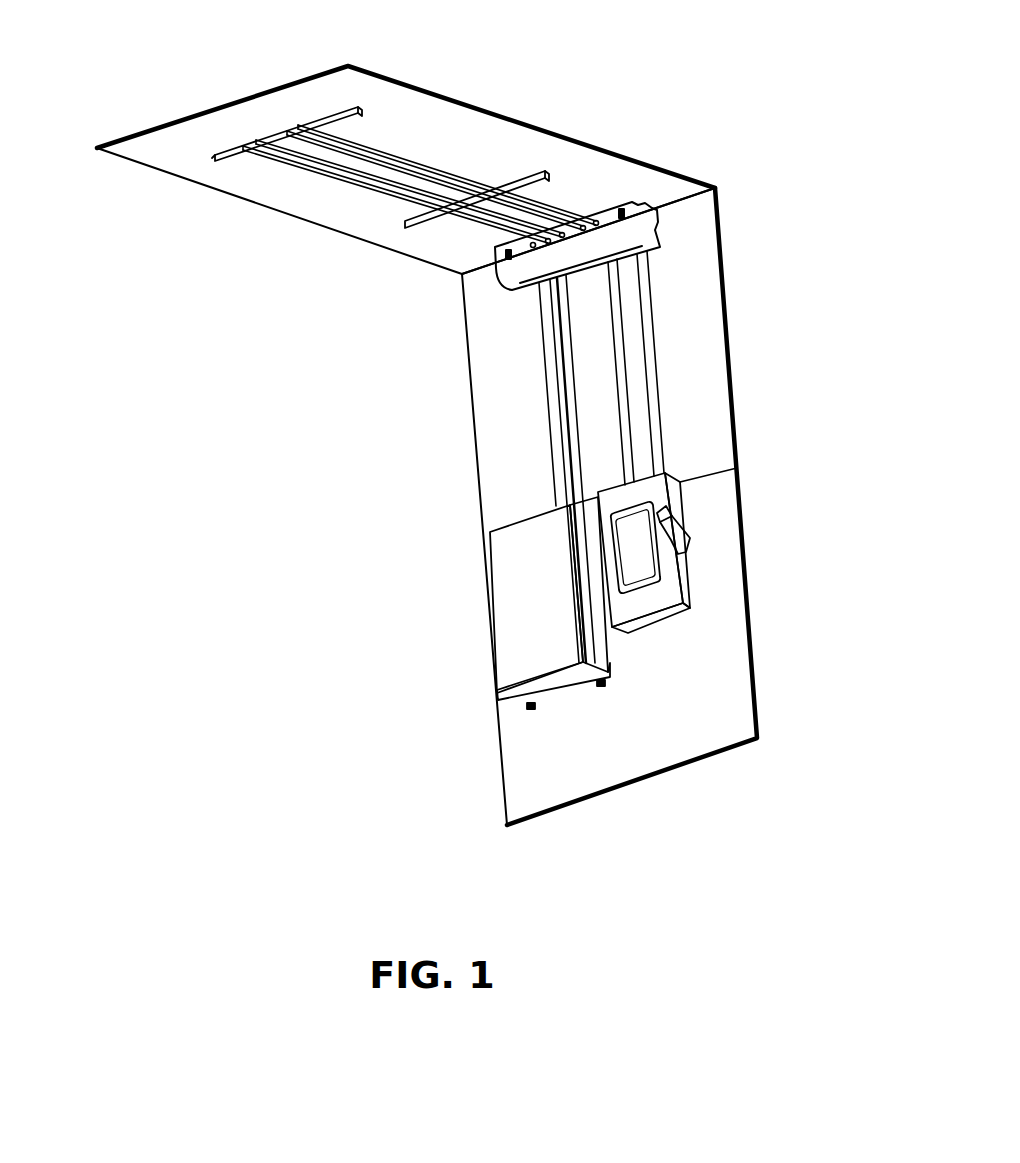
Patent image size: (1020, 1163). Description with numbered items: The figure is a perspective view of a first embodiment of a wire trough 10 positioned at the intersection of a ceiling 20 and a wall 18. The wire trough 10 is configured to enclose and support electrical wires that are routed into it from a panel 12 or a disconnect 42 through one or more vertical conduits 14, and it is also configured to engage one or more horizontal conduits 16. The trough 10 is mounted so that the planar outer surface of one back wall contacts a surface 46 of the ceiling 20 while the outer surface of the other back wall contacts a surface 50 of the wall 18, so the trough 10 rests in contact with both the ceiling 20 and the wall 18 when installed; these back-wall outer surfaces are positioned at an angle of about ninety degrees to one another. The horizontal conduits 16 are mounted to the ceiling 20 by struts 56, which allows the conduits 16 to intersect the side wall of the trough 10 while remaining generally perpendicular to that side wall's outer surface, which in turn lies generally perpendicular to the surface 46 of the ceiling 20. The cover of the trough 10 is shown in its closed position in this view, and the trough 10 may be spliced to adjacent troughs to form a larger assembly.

The wire trough 10 is at (684, 222).
The panel 12 is at (498, 632).
The vertical conduits 14 is at (632, 403).
The horizontal conduits 16 is at (402, 157).
The wall 18 is at (748, 572).
The ceiling 20 is at (630, 160).
The disconnect 42 is at (687, 523).
The surface of the ceiling 46 is at (419, 91).
The surface of the wall 50 is at (697, 670).
The struts 56 is at (215, 163).